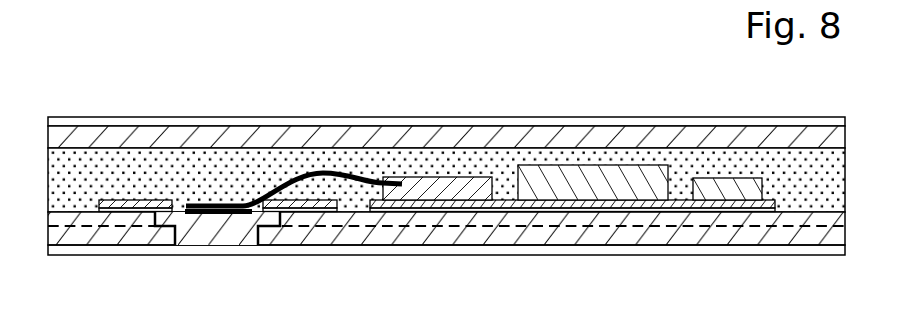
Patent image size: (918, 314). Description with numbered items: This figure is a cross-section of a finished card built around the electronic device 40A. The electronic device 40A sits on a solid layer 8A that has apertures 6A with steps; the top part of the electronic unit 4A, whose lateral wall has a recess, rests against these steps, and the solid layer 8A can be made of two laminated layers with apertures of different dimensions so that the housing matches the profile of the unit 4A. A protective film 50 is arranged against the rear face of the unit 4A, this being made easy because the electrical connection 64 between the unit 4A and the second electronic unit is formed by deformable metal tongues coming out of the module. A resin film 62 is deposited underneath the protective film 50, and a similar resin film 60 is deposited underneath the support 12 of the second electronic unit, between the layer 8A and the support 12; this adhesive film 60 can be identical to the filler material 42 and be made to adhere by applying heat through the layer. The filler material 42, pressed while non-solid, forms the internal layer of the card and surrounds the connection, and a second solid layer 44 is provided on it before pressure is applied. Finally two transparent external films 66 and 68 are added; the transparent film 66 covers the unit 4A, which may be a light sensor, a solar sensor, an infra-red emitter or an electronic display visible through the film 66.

The transparent external film 68 is at (636, 122).
The second solid layer 44 is at (115, 138).
The filler material 42 is at (172, 163).
The solid layer 8A is at (493, 237).
The transparent film 66 is at (688, 248).
The electronic unit 4A is at (217, 233).
The apertures with steps 6A is at (160, 250).
The resin film 62 is at (108, 228).
The protective film 50 is at (313, 203).
The support 12 is at (728, 203).
The resin film 60 is at (582, 230).
The electronic device 40A is at (431, 152).
The electrical connection 64 is at (297, 172).